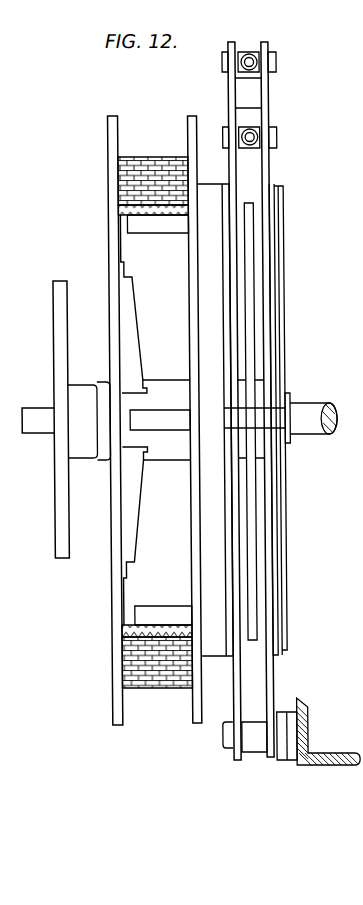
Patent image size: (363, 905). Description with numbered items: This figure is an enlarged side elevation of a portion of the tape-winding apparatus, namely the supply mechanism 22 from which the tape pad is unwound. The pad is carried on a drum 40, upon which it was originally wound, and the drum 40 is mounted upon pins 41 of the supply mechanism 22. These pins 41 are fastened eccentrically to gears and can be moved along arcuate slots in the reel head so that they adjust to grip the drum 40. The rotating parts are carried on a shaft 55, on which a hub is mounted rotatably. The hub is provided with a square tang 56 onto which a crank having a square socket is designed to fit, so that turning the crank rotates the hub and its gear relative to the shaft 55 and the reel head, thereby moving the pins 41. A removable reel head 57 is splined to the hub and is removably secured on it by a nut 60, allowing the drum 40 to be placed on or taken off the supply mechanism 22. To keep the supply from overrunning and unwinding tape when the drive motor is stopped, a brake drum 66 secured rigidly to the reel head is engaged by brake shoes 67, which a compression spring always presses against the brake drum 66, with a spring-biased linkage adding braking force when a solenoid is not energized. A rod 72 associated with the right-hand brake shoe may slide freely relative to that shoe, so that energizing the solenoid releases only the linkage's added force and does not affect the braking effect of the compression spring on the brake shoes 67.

The supply mechanism 22 is at (93, 637).
The drum 40 is at (124, 238).
The pins 41 is at (144, 228).
The shaft 55 is at (307, 413).
The square tang 56 is at (42, 407).
The removable reel head 57 is at (114, 143).
The nut 60 is at (80, 448).
The brake drum 66 is at (214, 197).
The brake shoes 67 is at (233, 87).
The rod 72 is at (250, 52).